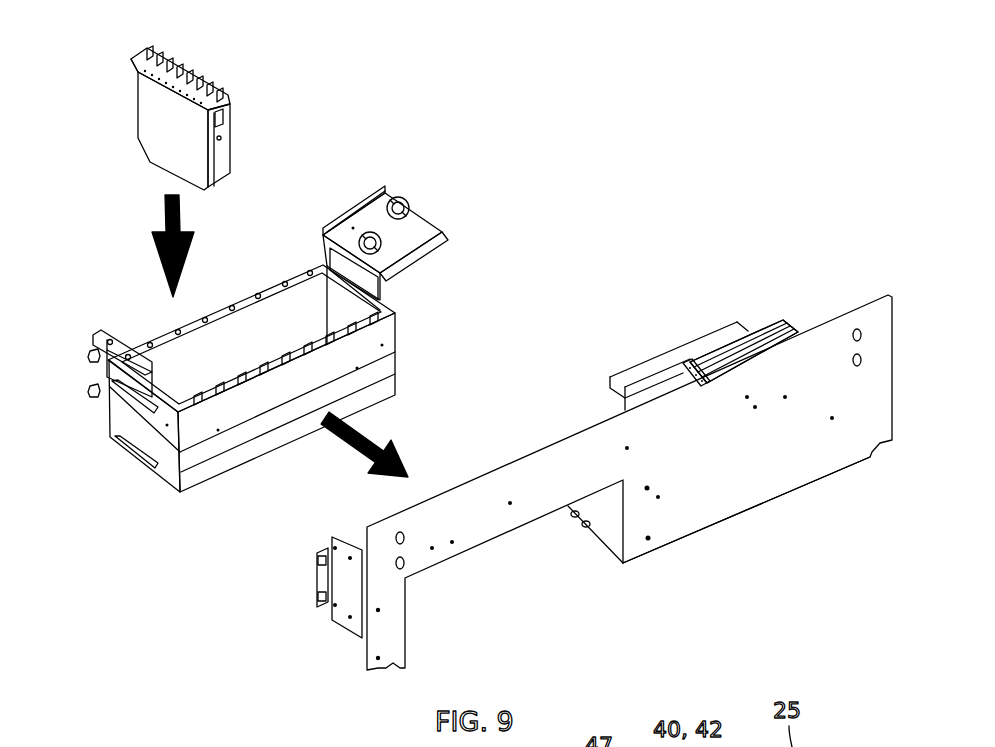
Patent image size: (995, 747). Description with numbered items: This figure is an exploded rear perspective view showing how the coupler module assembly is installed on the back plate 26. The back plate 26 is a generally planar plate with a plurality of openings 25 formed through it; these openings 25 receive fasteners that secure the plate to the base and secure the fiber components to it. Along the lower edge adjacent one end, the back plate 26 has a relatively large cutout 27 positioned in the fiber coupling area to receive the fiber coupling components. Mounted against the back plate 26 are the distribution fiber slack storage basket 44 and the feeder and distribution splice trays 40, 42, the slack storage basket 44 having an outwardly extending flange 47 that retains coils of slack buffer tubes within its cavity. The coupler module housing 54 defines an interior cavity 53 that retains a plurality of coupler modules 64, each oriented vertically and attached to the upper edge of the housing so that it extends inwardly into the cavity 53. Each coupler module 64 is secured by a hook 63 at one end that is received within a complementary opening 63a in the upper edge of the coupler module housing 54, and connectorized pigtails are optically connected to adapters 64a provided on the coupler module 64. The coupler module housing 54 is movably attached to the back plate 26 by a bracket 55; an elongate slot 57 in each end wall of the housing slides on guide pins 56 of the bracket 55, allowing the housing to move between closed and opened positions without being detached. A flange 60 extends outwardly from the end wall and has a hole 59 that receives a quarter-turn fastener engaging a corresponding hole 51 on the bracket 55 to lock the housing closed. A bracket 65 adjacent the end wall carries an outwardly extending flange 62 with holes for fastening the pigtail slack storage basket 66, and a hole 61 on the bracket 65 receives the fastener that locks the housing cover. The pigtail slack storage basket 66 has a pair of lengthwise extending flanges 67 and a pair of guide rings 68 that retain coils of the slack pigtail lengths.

The openings 25 is at (853, 332).
The back plate 26 is at (795, 458).
The cutout 27 is at (494, 607).
The feeder fiber splice tray 40 is at (768, 327).
The distribution fiber splice trays 42 is at (744, 351).
The distribution fiber slack storage basket 44 is at (615, 402).
The flange 47 is at (695, 337).
The hole 51 is at (310, 552).
The interior cavity 53 is at (283, 308).
The coupler module housing 54 is at (225, 455).
The bracket 55 is at (347, 583).
The guide pins 56 is at (585, 530).
The elongate slot 57 is at (133, 458).
The hole 59 is at (110, 388).
The flange 60 is at (95, 390).
The hole 61 is at (92, 352).
The flange 62 is at (103, 332).
The hook 63 is at (233, 120).
The opening 63a is at (247, 390).
The coupler module 64 is at (137, 90).
The adapters 64a is at (192, 65).
The bracket 65 is at (387, 293).
The pigtail slack storage basket 66 is at (418, 230).
The lengthwise extending flanges 67 is at (433, 258).
The guide rings 68 is at (401, 198).